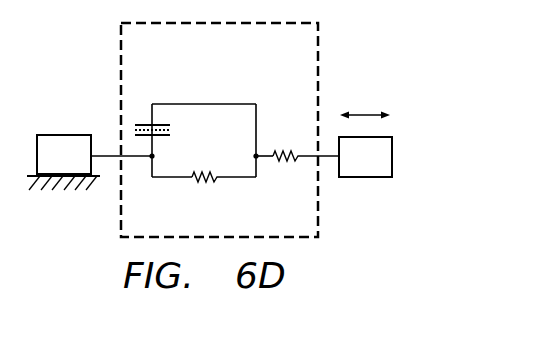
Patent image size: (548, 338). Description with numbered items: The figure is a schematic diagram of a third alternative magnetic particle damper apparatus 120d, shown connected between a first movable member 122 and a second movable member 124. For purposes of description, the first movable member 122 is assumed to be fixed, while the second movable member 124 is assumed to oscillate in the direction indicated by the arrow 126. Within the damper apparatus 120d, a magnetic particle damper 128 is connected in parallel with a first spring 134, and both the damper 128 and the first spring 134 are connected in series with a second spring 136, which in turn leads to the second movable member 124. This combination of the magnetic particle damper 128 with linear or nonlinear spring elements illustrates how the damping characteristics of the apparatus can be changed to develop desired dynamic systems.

The third alternative magnetic particle damper apparatus 120d is at (254, 60).
The first movable member 122 is at (55, 135).
The second movable member 124 is at (377, 178).
The arrow 126 is at (368, 110).
The magnetic particle damper 128 is at (171, 133).
The first spring 134 is at (200, 183).
The second spring 136 is at (286, 165).